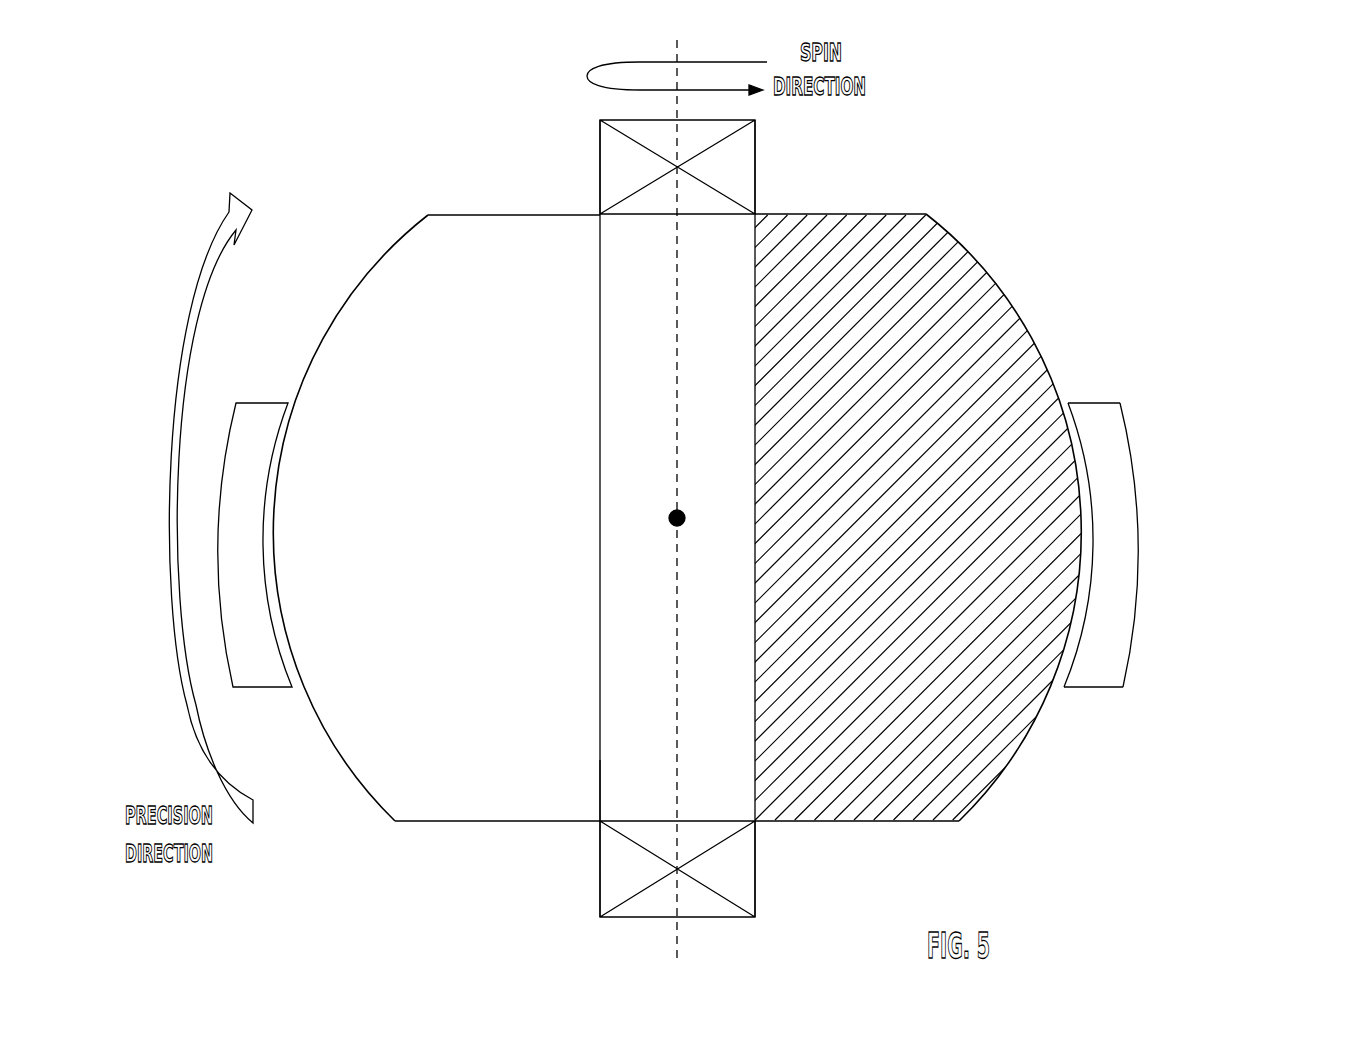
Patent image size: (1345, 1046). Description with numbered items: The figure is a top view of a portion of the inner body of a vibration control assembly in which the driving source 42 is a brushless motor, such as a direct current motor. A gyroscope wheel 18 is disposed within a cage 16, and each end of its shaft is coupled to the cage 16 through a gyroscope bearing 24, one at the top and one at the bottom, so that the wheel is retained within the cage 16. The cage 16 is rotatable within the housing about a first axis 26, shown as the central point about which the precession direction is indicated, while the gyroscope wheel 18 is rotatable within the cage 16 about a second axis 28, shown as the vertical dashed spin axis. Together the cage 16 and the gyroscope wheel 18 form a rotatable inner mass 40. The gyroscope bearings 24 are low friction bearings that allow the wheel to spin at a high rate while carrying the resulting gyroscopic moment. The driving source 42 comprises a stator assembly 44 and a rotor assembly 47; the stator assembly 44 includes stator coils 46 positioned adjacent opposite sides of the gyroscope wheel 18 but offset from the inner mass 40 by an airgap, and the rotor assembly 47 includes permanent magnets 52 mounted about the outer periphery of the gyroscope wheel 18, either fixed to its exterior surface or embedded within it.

The cage 16 is at (743, 397).
The gyroscope wheel 18 is at (1038, 742).
The gyroscope bearing 24 is at (657, 163).
The first axis 26 is at (682, 522).
The second axis 28 is at (675, 784).
The inner mass 40 is at (782, 183).
The driving source 42 is at (1214, 209).
The stator assembly 44 is at (1200, 521).
The stator coil 46 is at (257, 424).
The rotor assembly 47 is at (924, 173).
The permanent magnet 52 is at (423, 270).